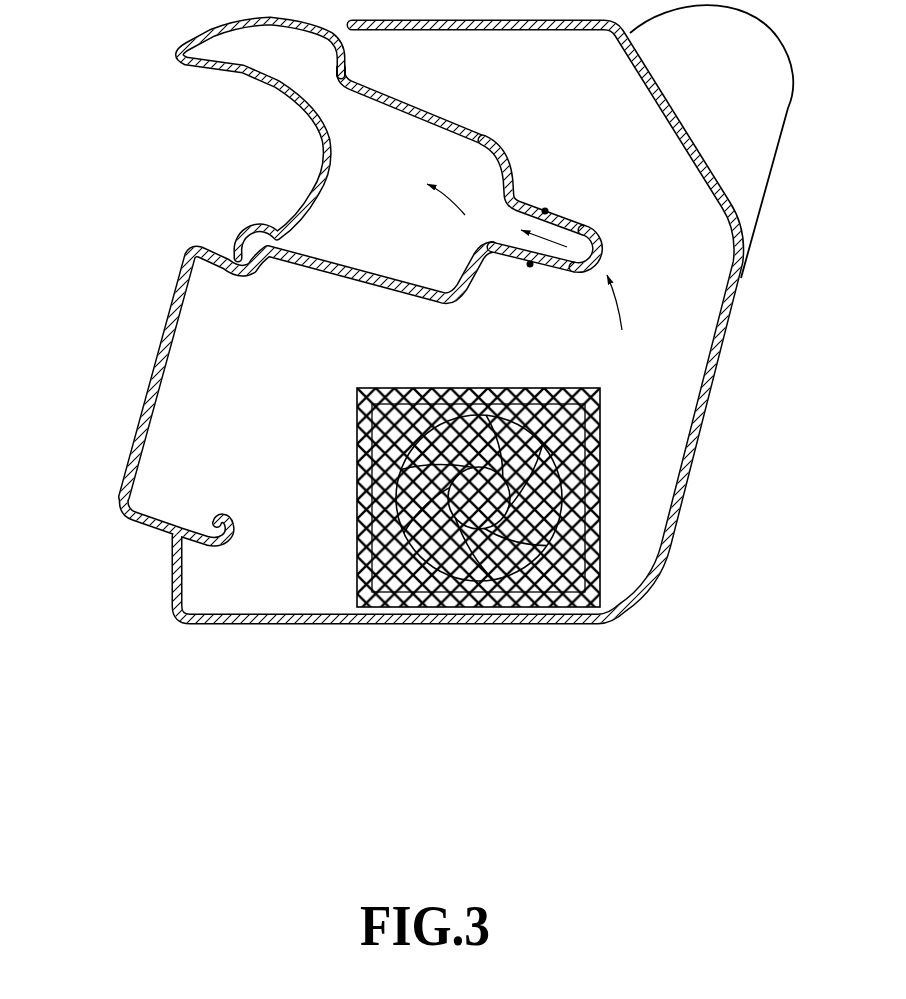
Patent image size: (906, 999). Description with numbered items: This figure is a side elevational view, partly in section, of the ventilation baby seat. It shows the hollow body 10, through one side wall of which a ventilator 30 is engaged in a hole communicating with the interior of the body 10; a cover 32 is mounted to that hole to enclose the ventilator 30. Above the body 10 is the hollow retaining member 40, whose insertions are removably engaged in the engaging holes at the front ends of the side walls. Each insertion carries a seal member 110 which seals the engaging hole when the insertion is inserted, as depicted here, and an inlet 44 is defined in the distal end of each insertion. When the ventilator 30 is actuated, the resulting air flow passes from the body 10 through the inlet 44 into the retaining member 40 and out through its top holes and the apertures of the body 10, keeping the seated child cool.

The hollow body 10 is at (178, 552).
The ventilator 30 is at (471, 640).
The cover 32 is at (602, 623).
The retaining member 40 is at (282, 143).
The inlet 44 is at (592, 264).
The seal member 110 is at (556, 200).